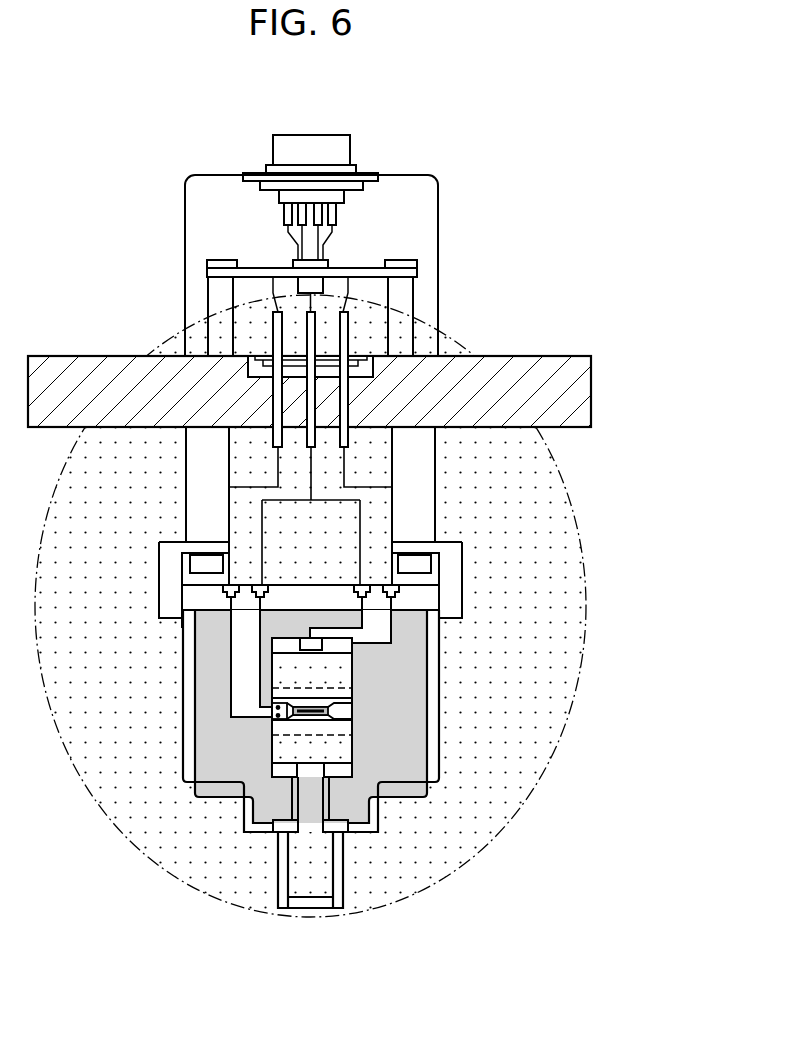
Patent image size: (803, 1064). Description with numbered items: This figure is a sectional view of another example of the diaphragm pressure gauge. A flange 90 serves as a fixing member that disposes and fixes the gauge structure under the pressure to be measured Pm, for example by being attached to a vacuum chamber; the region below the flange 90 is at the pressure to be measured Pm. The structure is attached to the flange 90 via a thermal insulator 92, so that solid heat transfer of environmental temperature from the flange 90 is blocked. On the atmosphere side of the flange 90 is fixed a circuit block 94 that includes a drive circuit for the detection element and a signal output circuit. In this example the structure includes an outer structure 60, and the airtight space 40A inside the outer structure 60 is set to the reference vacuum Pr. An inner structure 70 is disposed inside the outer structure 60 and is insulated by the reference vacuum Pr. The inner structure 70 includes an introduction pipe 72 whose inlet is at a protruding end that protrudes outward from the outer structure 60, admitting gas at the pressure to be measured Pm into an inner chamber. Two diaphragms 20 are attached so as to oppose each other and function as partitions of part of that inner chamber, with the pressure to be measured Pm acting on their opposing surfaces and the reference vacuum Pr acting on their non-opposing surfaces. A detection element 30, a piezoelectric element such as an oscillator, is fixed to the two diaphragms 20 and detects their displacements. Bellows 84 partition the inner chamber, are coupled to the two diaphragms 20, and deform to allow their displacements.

The circuit block 94 is at (437, 243).
The flange 90 is at (591, 388).
The thermal insulator 92 is at (186, 482).
The pressure to be measured Pm is at (586, 624).
The airtight space 40A is at (265, 746).
The outer structure 60 is at (284, 759).
The reference vacuum Pr is at (383, 770).
The bellows 84 is at (328, 685).
The diaphragm 20 is at (272, 725).
The detection element 30 is at (343, 708).
The inner structure 70 is at (281, 774).
The introduction pipe 72 is at (287, 804).